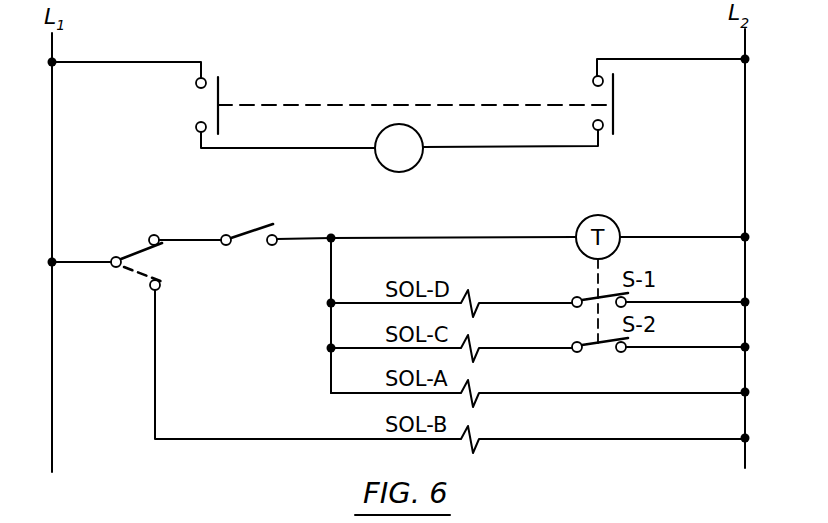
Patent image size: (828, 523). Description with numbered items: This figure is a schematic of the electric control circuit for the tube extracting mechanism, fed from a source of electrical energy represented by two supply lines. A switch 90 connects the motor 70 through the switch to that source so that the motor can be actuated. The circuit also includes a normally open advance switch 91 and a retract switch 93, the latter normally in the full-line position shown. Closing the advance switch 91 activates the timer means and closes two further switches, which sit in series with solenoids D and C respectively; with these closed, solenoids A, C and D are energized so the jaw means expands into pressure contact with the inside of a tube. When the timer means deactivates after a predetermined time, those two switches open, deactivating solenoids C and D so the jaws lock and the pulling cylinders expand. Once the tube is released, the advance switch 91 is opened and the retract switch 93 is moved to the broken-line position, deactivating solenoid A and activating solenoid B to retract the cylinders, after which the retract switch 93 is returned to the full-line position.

The switch 90 is at (222, 90).
The motor 70 is at (415, 167).
The retract switch 93 is at (137, 247).
The advance switch 91 is at (250, 226).